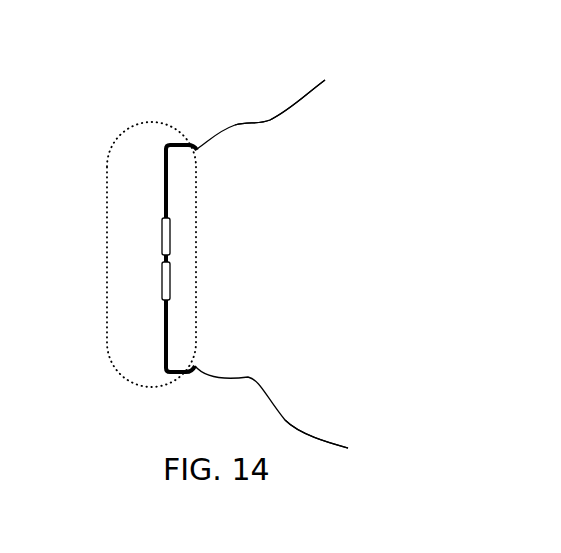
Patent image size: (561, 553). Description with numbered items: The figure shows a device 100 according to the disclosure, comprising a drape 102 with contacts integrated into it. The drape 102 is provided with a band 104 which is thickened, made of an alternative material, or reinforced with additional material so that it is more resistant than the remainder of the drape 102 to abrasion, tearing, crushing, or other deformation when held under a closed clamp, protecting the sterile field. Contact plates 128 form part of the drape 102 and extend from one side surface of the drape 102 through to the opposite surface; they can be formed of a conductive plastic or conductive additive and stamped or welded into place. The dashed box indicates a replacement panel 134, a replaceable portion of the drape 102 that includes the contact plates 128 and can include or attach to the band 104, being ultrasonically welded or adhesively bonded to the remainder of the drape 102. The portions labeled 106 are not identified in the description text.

The device 100 is at (292, 222).
The drape 102 is at (308, 82).
The band 104 is at (173, 377).
The band surface 106 is at (272, 122).
The contact plates 128 is at (158, 282).
The replacement panel 134 is at (138, 124).